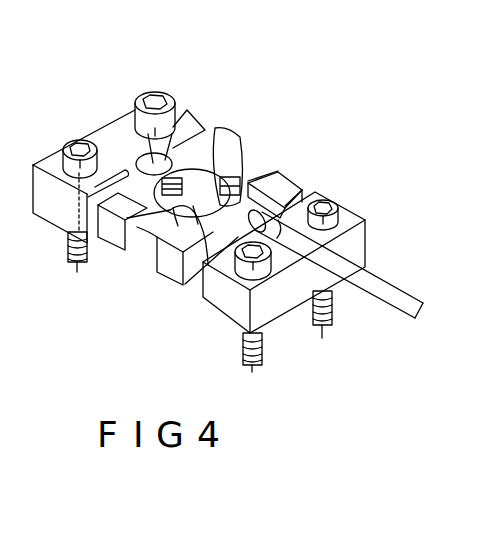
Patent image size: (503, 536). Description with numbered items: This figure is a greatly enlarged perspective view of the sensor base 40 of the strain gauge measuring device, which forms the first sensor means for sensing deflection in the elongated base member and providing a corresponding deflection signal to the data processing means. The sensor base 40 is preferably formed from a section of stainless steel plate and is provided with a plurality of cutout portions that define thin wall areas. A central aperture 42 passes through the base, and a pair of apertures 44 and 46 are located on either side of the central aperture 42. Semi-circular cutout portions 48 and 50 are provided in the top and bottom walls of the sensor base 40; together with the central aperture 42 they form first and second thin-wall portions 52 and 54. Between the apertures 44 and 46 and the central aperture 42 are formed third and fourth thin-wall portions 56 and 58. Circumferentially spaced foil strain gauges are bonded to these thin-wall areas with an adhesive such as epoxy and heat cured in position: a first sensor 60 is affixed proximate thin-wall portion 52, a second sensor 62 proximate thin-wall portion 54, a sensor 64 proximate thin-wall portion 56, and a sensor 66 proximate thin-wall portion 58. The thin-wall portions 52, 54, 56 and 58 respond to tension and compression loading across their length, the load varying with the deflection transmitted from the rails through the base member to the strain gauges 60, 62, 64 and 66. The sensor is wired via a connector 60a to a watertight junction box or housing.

The sensor base 40 is at (365, 237).
The central aperture 42 is at (160, 280).
The aperture 44 is at (124, 115).
The aperture 46 is at (302, 190).
The semi-circular cutout portion 48 is at (137, 227).
The semi-circular cutout portion 50 is at (250, 172).
The first thin-wall portion 52 is at (278, 173).
The second thin-wall portion 54 is at (157, 237).
The third thin-wall portion 56 is at (192, 106).
The fourth thin-wall portion 58 is at (237, 232).
The first sensor 60 is at (218, 175).
The connector 60a is at (372, 288).
The second sensor 62 is at (170, 210).
The sensor 64 is at (157, 188).
The sensor 66 is at (228, 108).